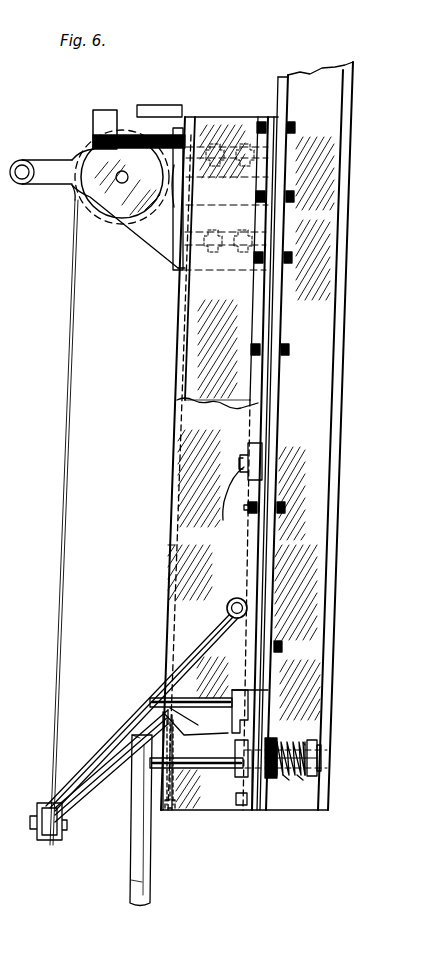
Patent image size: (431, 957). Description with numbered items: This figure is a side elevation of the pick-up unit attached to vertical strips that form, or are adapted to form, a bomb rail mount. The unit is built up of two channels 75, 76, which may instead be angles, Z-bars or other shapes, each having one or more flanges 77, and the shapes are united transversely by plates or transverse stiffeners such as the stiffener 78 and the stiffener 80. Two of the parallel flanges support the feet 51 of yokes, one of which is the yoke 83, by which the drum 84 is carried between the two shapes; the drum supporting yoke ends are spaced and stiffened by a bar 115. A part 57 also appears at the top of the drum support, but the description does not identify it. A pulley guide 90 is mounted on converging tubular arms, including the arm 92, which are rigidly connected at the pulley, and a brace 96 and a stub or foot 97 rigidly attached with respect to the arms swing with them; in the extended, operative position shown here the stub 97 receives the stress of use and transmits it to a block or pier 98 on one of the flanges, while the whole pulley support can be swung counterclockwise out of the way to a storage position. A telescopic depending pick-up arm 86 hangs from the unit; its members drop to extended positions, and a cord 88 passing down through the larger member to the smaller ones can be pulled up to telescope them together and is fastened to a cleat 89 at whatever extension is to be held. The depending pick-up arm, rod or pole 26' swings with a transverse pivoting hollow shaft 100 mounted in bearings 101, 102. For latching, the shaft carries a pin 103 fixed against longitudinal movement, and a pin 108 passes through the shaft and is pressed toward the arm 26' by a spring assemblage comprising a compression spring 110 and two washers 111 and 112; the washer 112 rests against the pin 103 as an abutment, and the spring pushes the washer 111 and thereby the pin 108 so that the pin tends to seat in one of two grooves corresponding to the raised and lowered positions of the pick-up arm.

The feet 51 is at (180, 118).
The pulley housing 57 is at (126, 133).
The transverse stiffener 78 is at (235, 130).
The flange 77 is at (182, 345).
The channel 76 is at (200, 368).
The channel 75 is at (205, 473).
The transverse stiffener 80 is at (262, 450).
The yoke 83 is at (140, 228).
The drum 84 is at (76, 218).
The bar 115 is at (20, 185).
The arm 92 is at (132, 710).
The brace 96 is at (120, 788).
The pulley guide 90 is at (50, 840).
The telescopic depending pick-up arm 86 is at (152, 878).
The depending pick-up arm 26' is at (110, 819).
The stub (foot) 97 is at (212, 697).
The block or pier 98 is at (248, 692).
The cord 88 is at (168, 720).
The transverse pivoting hollow shaft 100 is at (232, 762).
The bearing 101 is at (240, 780).
The washer 112 is at (308, 742).
The washer 111 is at (272, 745).
The pin 103 is at (322, 758).
The spring 110 is at (290, 778).
The pin 108 is at (285, 778).
The bearing 102 is at (257, 812).
The cleat 89 is at (172, 806).